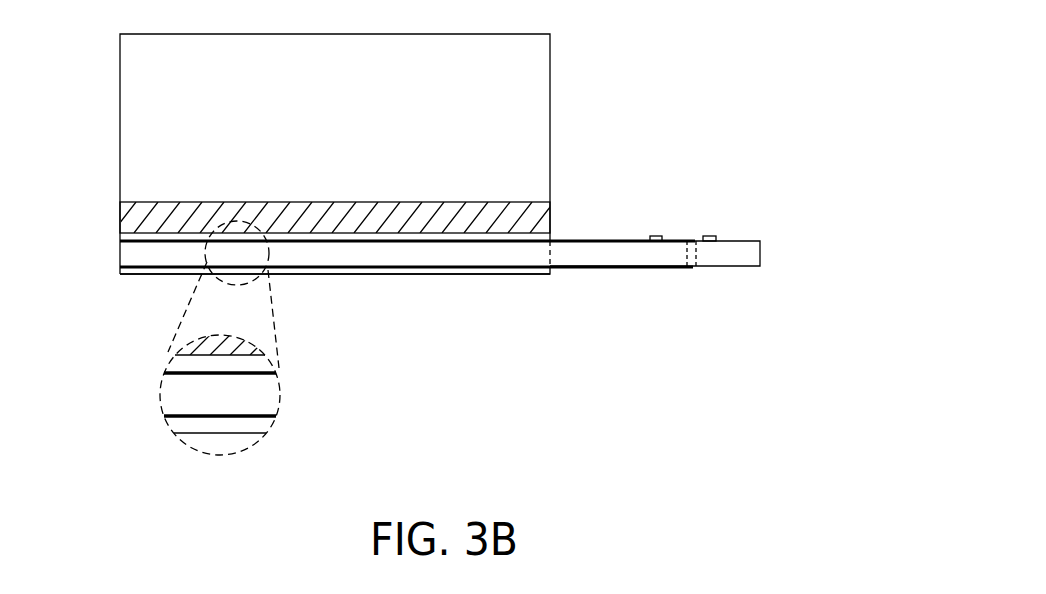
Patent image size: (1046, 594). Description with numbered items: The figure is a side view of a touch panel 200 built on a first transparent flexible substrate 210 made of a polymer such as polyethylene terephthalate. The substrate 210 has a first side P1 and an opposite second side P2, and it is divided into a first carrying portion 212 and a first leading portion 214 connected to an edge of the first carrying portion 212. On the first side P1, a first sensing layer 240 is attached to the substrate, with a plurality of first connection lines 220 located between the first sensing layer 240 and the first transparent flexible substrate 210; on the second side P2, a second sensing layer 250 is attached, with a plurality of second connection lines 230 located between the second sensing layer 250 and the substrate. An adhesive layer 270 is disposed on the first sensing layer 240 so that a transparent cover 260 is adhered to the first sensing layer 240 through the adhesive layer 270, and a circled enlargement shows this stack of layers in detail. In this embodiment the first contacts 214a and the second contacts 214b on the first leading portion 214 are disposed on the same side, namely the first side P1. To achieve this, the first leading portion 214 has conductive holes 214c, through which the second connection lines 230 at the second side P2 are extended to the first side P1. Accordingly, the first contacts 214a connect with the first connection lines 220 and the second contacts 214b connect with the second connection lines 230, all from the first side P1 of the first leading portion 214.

The touch panel 200 is at (746, 452).
The first transparent flexible substrate 210 is at (610, 329).
The first carrying portion 212 is at (493, 258).
The first leading portion 214 is at (583, 258).
The first contacts 214a is at (652, 236).
The second contacts 214b is at (708, 236).
The conductive holes 214c is at (697, 268).
The first connection lines 220 is at (276, 373).
The second connection lines 230 is at (276, 416).
The first sensing layer 240 is at (178, 364).
The second sensing layer 250 is at (170, 425).
The transparent cover 260 is at (139, 114).
The adhesive layer 270 is at (133, 217).
The first side P1 is at (760, 179).
The second side P2 is at (779, 299).